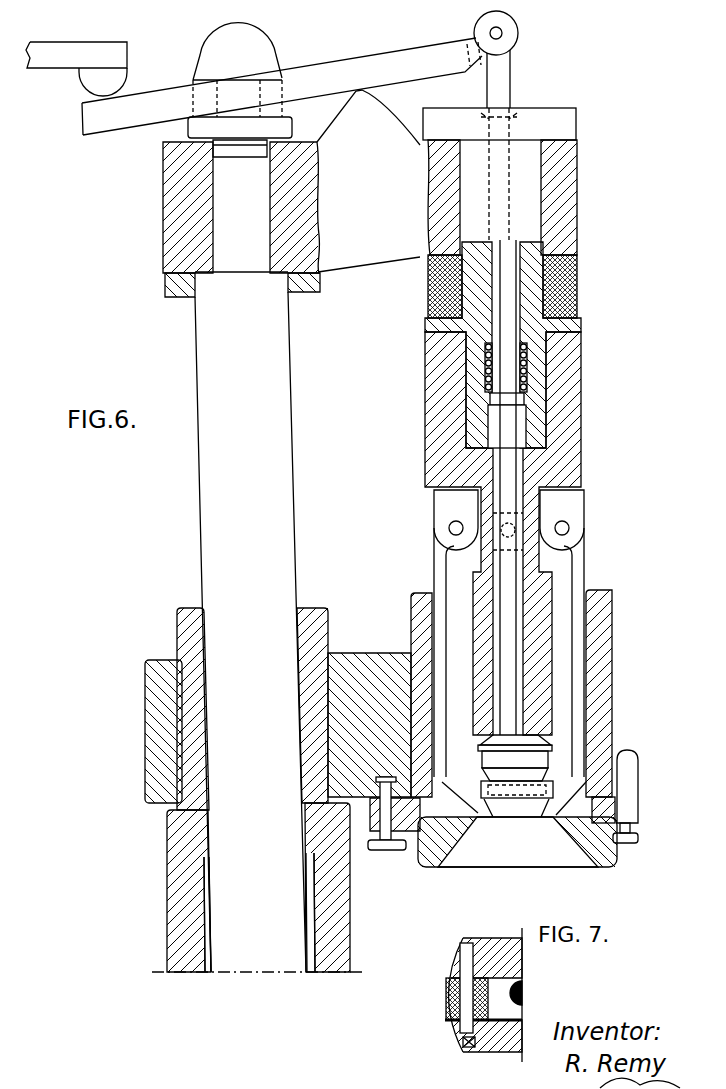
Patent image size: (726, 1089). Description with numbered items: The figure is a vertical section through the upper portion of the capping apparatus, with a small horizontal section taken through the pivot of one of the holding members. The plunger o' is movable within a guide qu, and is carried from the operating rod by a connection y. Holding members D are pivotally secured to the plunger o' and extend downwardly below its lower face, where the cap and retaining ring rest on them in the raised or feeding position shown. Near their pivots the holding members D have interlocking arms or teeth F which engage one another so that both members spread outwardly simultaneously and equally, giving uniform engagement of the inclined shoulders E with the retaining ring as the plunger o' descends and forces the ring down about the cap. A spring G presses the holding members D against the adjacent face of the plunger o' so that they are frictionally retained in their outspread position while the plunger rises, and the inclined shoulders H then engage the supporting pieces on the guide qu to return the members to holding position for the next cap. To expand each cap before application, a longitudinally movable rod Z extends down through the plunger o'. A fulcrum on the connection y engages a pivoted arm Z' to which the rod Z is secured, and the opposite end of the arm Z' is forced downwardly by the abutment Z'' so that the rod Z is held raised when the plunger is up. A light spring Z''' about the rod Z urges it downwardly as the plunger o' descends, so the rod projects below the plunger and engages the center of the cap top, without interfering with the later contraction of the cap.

In FIG. 6, the longitudinally movable rod Z is at (513, 145).
In FIG. 6, the pivoted arm Z' is at (300, 73).
In FIG. 6, the abutment Z'' is at (76, 78).
In FIG. 6, the light spring Z''' is at (566, 365).
In FIG. 6, the connection y is at (377, 243).
In FIG. 6, the tube I' is at (259, 632).
In FIG. 6, the plunger o' is at (528, 533).
In FIG. 6, the interlocking arms or teeth F is at (483, 520).
In FIG. 6, the holding members D is at (455, 575).
In FIG. 7, the holding members D is at (498, 1052).
In FIG. 6, the valve rod C is at (493, 733).
In FIG. 6, the inclined shoulders E is at (480, 752).
In FIG. 6, the inclined shoulders H is at (478, 813).
In FIG. 6, the guide qu is at (611, 683).
In FIG. 7, the spring G is at (441, 984).
In FIG. 7, the body block o is at (486, 943).